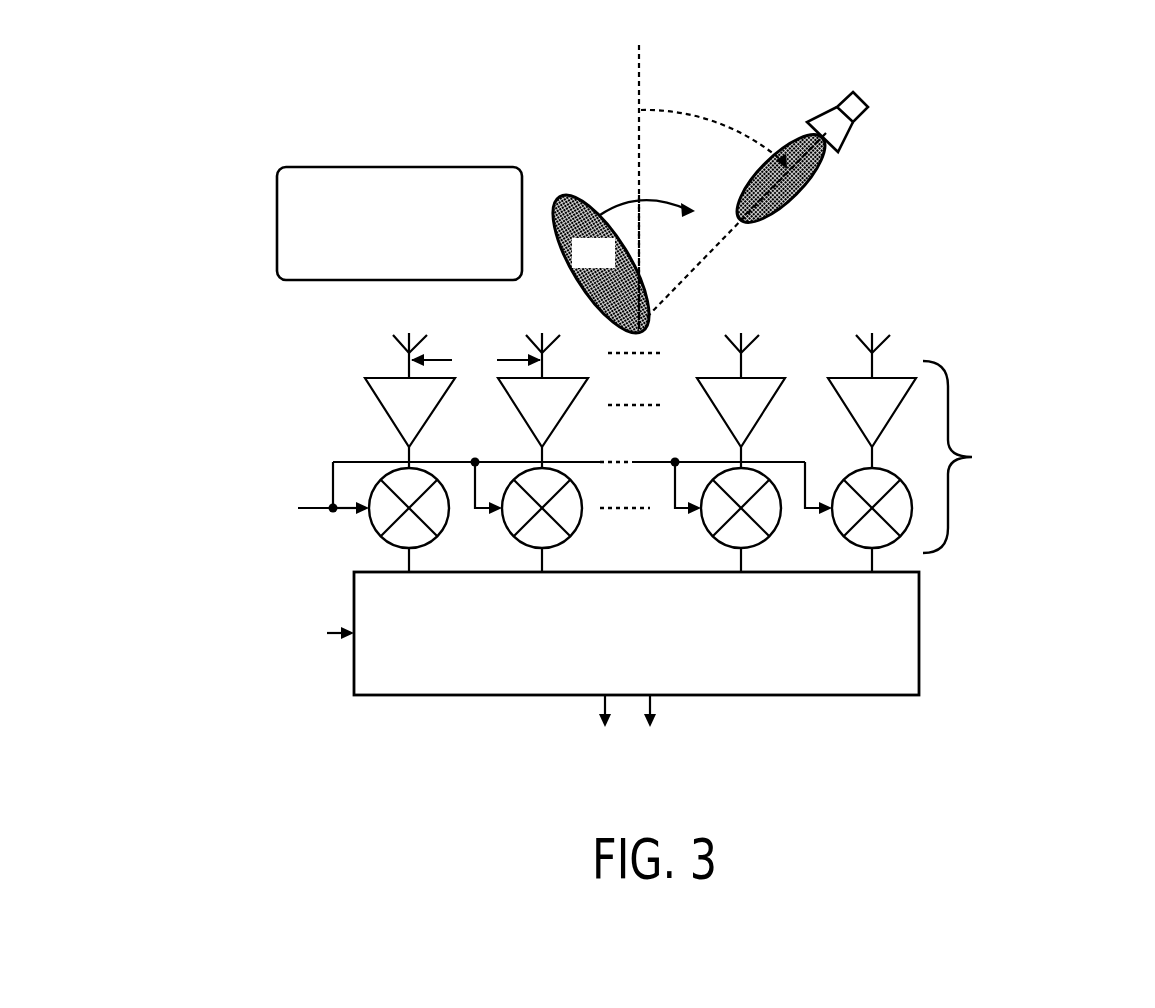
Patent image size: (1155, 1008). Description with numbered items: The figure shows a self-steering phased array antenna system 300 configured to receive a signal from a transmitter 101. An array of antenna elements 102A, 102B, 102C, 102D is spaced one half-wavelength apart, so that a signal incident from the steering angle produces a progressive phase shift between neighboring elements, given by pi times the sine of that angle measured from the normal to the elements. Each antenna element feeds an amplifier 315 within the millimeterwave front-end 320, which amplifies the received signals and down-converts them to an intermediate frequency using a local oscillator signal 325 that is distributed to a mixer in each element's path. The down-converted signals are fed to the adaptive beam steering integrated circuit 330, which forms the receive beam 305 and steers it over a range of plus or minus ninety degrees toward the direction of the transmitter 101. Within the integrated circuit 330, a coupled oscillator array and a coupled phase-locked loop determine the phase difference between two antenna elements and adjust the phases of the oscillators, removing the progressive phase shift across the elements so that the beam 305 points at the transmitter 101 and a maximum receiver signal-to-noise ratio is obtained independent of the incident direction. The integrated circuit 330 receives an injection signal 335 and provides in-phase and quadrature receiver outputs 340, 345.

The beam-steering receiver system 300 is at (586, 72).
The transmitter 101 is at (808, 143).
The receive beam 305 is at (600, 264).
The antenna element 102A is at (382, 338).
The antenna element 102B is at (520, 338).
The antenna element 102C is at (713, 338).
The antenna element 102D is at (846, 338).
The low noise amplifier 315 is at (640, 412).
The millimeterwave front-end 320 is at (670, 466).
The local oscillator signal 325 is at (527, 489).
The adaptive beam steering integrated circuit 330 is at (636, 633).
The injection frequency signal 335 is at (304, 629).
The I output 340 is at (587, 728).
The Q output 345 is at (670, 728).